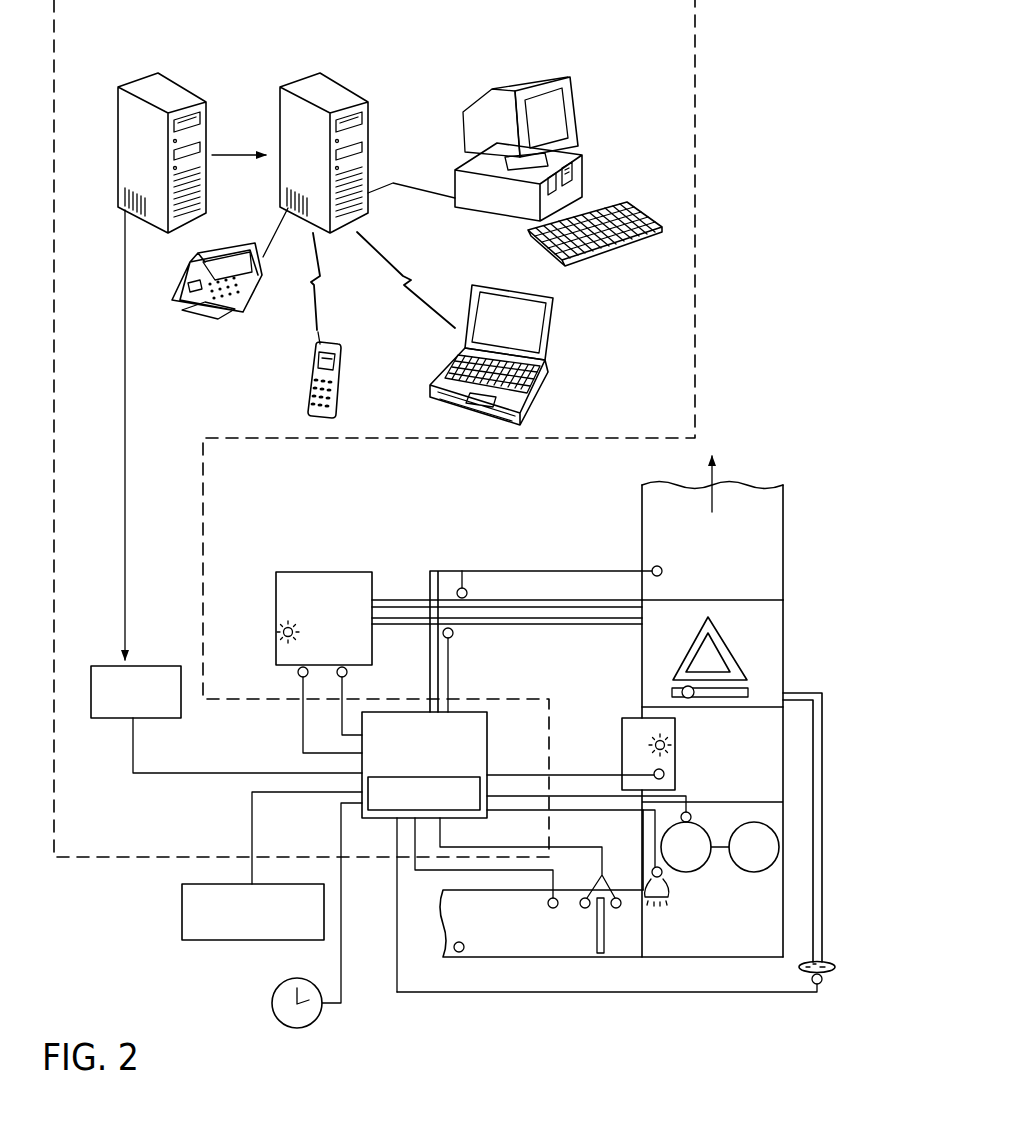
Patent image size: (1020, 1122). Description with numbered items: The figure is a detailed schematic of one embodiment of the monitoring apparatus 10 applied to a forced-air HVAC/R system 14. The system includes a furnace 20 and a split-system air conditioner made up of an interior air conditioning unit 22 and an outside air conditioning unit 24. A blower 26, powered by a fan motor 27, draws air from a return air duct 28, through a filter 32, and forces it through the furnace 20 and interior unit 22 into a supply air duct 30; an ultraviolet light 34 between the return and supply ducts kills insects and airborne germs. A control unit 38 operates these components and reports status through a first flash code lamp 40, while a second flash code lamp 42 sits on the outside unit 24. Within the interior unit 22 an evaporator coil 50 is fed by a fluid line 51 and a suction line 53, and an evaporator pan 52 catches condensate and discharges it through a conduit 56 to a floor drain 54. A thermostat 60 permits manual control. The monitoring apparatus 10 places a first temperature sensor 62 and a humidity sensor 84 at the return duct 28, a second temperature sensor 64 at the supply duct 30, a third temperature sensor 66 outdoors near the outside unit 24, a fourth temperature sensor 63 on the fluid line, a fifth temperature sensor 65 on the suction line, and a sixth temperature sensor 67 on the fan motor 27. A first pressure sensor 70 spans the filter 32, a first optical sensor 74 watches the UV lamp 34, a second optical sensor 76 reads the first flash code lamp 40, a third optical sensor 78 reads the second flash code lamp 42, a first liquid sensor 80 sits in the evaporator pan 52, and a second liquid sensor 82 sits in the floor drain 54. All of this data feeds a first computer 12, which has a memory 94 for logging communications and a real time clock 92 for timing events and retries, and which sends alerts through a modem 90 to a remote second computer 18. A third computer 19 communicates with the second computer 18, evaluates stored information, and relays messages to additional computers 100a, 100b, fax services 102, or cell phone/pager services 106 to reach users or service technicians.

The monitoring apparatus 10 is at (716, 305).
The first computer 12 is at (494, 718).
The HVAC/R system 14 is at (792, 618).
The second computer 18 is at (146, 60).
The third computer 19 is at (364, 90).
The furnace 20 is at (790, 775).
The interior air conditioning unit 22 is at (642, 637).
The outside air conditioning unit 24 is at (356, 568).
The blower 26 is at (754, 872).
The fan motor 27 is at (686, 872).
The return air duct 28 is at (505, 962).
The supply air duct 30 is at (790, 540).
The filter 32 is at (600, 954).
The ultraviolet light 34 is at (652, 903).
The control unit 38 is at (682, 723).
The first flash code lamp 40 is at (652, 737).
The second flash code lamp 42 is at (280, 632).
The evaporator coil 50 is at (726, 645).
The fluid line 51 is at (488, 598).
The evaporator pan 52 is at (746, 690).
The suction line 53 is at (528, 617).
The floor drain 54 is at (826, 958).
The conduit 56 is at (823, 728).
The thermostat 60 is at (240, 940).
The first temperature sensor 62 is at (553, 908).
The fourth temperature sensor 63 is at (444, 582).
The second temperature sensor 64 is at (655, 566).
The fifth temperature sensor 65 is at (452, 670).
The third temperature sensor 66 is at (347, 673).
The sixth temperature sensor 67 is at (692, 818).
The first pressure sensor 70 is at (604, 873).
The first optical sensor 74 is at (663, 877).
The second optical sensor 76 is at (666, 776).
The third optical sensor 78 is at (298, 673).
The first liquid sensor 80 is at (682, 690).
The second liquid sensor 82 is at (822, 986).
The humidity sensor 84 is at (459, 952).
The modem 90 is at (115, 718).
The real time clock 92 is at (300, 1029).
The memory 94 is at (375, 818).
The additional computer 100a is at (594, 170).
The additional computer 100b is at (554, 350).
The fax service 102 is at (183, 342).
The cell phone/pager service 106 is at (356, 373).